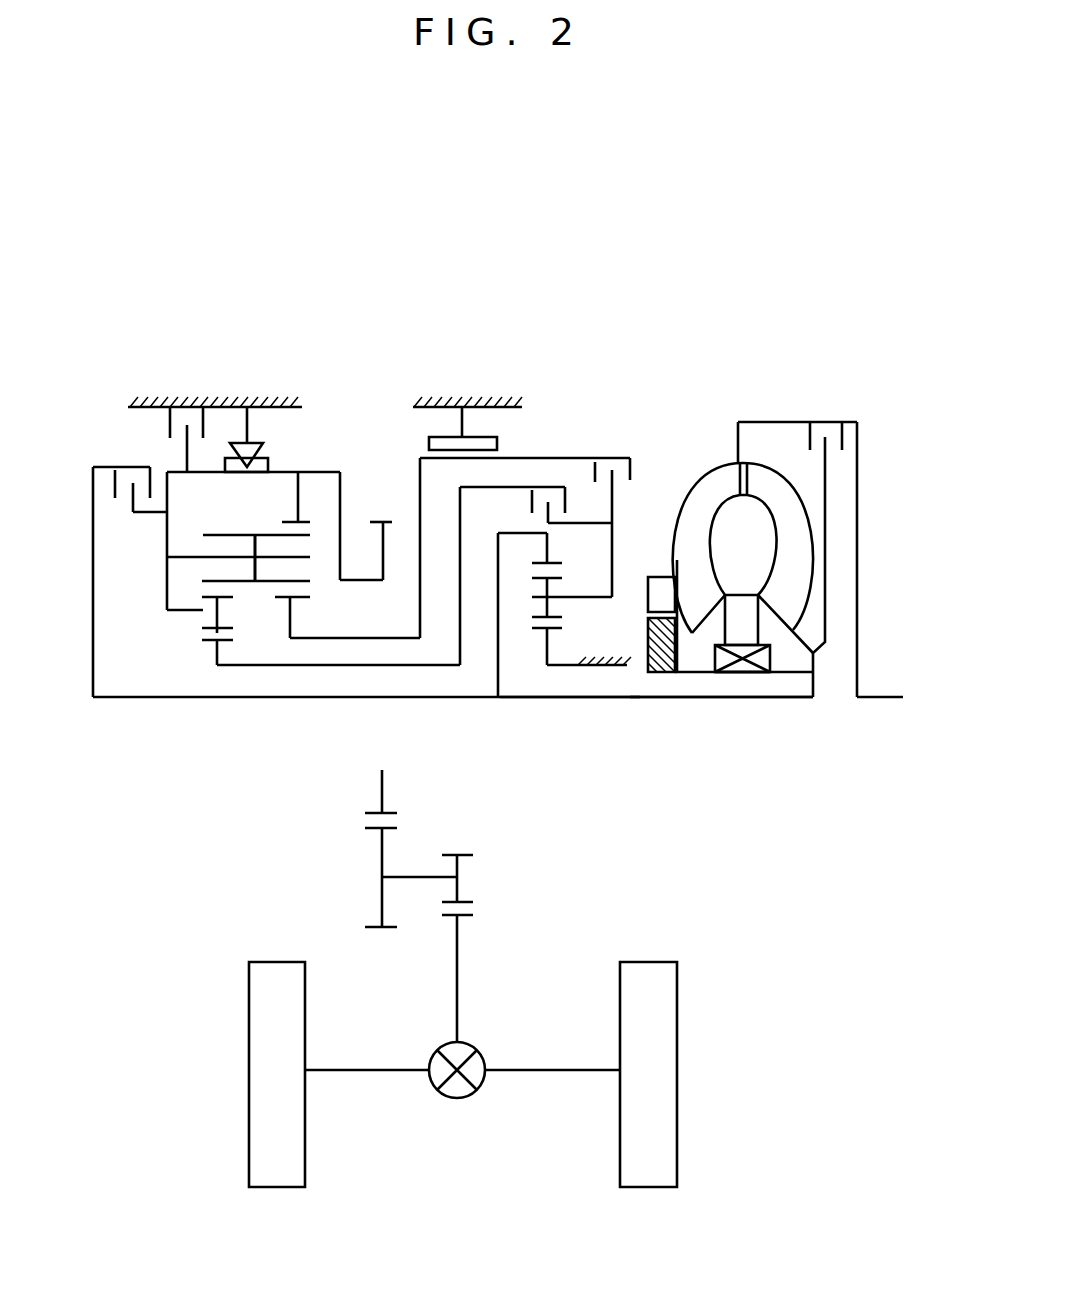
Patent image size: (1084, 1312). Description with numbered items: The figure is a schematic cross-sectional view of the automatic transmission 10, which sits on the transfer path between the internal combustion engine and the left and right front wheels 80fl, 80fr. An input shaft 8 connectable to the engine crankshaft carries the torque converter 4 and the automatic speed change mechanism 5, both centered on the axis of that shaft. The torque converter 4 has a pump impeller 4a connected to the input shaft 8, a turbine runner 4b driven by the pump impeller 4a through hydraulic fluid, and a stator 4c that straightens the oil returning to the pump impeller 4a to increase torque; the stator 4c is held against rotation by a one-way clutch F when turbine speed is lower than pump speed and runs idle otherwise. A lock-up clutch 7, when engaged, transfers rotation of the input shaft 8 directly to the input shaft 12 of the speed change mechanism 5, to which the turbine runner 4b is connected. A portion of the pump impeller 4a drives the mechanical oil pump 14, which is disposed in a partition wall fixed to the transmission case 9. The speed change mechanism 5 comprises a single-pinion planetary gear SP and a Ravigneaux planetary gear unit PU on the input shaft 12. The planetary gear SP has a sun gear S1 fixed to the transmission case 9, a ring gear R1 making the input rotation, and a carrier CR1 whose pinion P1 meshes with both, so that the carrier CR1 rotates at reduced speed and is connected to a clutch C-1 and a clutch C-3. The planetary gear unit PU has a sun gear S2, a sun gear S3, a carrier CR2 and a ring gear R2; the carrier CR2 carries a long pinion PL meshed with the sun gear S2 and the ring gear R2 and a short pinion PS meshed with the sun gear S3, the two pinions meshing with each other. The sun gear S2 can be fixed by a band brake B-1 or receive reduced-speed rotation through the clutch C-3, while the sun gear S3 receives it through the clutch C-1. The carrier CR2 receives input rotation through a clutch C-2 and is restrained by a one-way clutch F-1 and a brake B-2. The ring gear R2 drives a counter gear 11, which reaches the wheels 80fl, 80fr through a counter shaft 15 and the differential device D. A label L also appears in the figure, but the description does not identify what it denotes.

The automatic transmission 10 is at (512, 217).
The automatic speed change mechanism 5 is at (393, 374).
The brake B-2 is at (215, 417).
The one-way clutch F-1 is at (268, 439).
The planetary gear unit PU is at (329, 460).
The clutch C-2 is at (121, 473).
The carrier CR2 is at (165, 564).
The ring gear R2 is at (302, 520).
The counter gear 11 is at (385, 519).
The long pinion PL is at (292, 540).
The sun gear S2 is at (298, 602).
The short pinion PS is at (208, 624).
The sun gear S3 is at (212, 643).
The brake B-1 is at (467, 400).
The transmission case 9 is at (505, 410).
The clutch C-3 is at (525, 453).
The clutch C-1 is at (512, 561).
The carrier CR1 is at (617, 580).
The ring gear R1 is at (552, 562).
The pinion P1 is at (556, 614).
The sun gear S1 is at (538, 632).
The planetary gear SP is at (558, 648).
The mechanical oil pump 14 is at (660, 576).
The torque converter 4 is at (772, 409).
The pump impeller 4a is at (714, 478).
The turbine runner 4b is at (771, 473).
The stator 4c is at (757, 632).
The lock-up clutch 7 is at (832, 422).
The input shaft 8 is at (888, 698).
The input shaft 12 is at (705, 698).
The one-way clutch F is at (745, 673).
The line L is at (633, 710).
The counter shaft 15 is at (414, 875).
The differential device D is at (466, 1042).
The front wheel 80fl is at (249, 995).
The front wheel 80fr is at (677, 995).